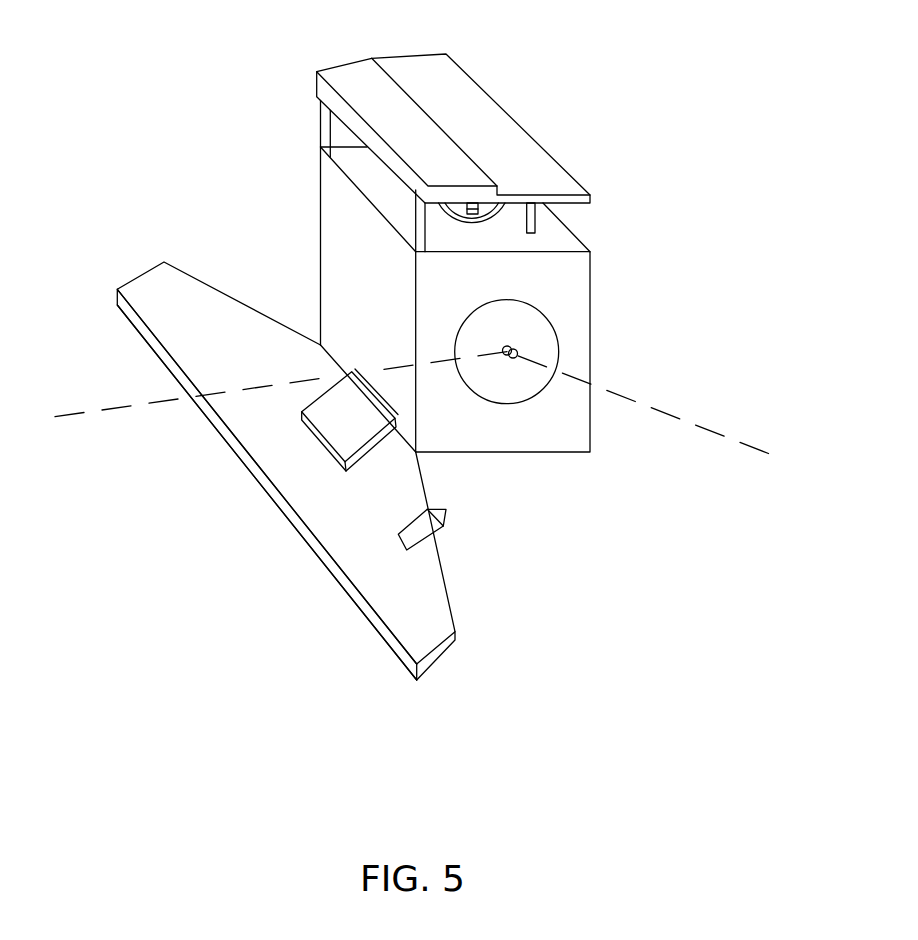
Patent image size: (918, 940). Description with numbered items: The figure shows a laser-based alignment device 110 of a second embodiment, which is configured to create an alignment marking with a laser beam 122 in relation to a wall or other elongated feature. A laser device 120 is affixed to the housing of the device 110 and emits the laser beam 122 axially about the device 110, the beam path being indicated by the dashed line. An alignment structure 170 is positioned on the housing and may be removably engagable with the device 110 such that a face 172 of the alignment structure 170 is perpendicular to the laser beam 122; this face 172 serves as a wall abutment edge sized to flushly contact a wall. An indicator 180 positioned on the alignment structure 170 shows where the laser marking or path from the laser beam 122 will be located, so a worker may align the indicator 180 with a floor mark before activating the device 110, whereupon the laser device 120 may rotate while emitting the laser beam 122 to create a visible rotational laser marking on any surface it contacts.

The laser-based alignment device 110 is at (612, 127).
The laser device 120 is at (518, 352).
The laser beam 122 is at (75, 414).
The alignment structure 170 is at (417, 622).
The face of the alignment structure 172 is at (262, 485).
The indicator 180 is at (443, 525).